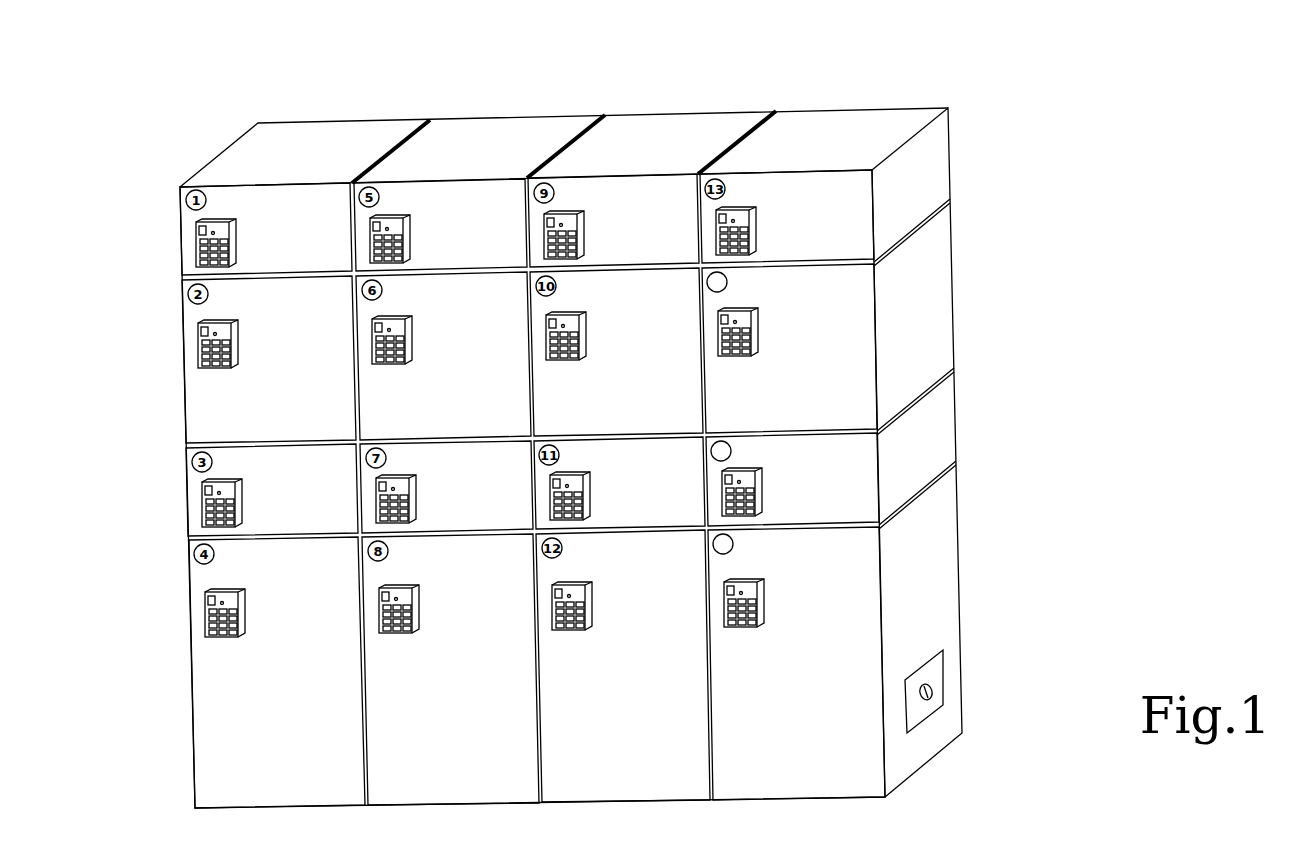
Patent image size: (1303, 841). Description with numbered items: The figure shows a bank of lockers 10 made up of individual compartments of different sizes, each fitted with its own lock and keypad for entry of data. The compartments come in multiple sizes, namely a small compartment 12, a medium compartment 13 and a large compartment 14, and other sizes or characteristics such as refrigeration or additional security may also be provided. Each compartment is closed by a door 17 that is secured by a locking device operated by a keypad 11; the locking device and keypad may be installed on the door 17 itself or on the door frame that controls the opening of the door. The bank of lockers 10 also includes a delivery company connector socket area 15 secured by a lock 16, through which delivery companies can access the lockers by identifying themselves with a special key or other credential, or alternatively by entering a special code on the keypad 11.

The bank of lockers 10 is at (968, 114).
The keypad 11 is at (748, 235).
The small compartment 12 is at (815, 500).
The medium compartment 13 is at (830, 360).
The large compartment 14 is at (830, 630).
The delivery company connector socket area 15 is at (933, 672).
The lock 16 is at (923, 697).
The door 17 is at (647, 143).